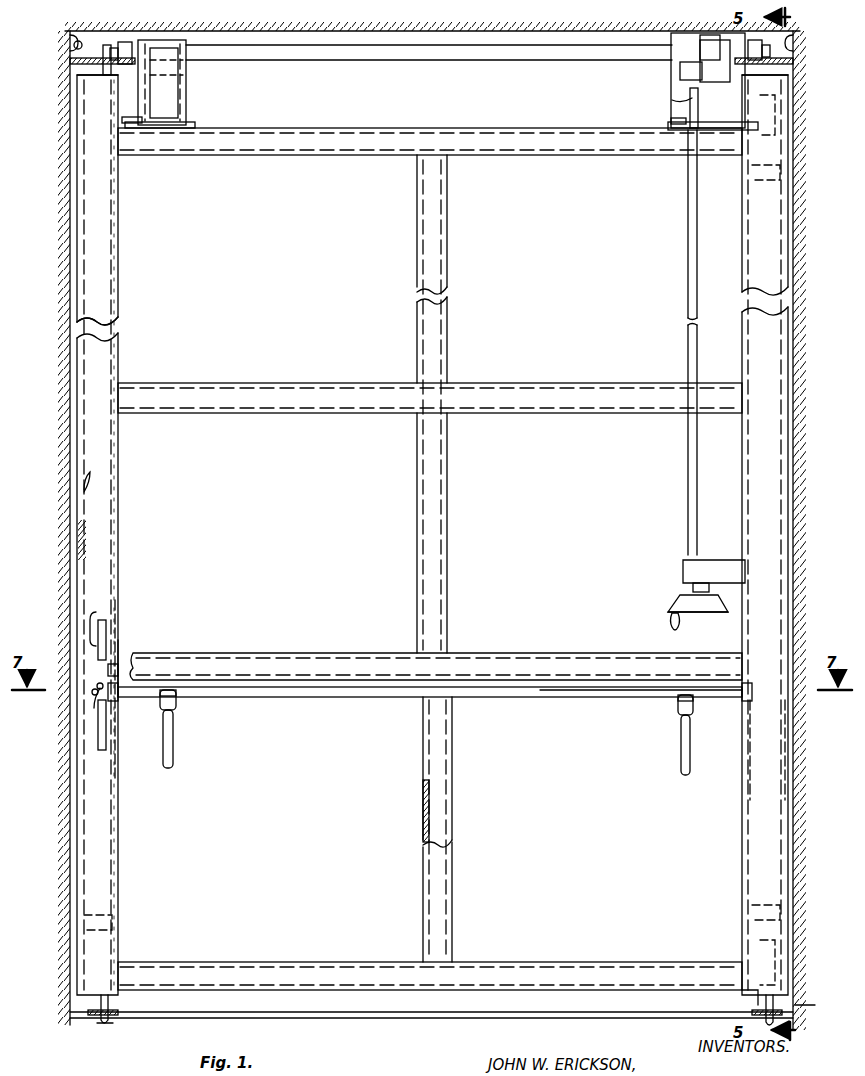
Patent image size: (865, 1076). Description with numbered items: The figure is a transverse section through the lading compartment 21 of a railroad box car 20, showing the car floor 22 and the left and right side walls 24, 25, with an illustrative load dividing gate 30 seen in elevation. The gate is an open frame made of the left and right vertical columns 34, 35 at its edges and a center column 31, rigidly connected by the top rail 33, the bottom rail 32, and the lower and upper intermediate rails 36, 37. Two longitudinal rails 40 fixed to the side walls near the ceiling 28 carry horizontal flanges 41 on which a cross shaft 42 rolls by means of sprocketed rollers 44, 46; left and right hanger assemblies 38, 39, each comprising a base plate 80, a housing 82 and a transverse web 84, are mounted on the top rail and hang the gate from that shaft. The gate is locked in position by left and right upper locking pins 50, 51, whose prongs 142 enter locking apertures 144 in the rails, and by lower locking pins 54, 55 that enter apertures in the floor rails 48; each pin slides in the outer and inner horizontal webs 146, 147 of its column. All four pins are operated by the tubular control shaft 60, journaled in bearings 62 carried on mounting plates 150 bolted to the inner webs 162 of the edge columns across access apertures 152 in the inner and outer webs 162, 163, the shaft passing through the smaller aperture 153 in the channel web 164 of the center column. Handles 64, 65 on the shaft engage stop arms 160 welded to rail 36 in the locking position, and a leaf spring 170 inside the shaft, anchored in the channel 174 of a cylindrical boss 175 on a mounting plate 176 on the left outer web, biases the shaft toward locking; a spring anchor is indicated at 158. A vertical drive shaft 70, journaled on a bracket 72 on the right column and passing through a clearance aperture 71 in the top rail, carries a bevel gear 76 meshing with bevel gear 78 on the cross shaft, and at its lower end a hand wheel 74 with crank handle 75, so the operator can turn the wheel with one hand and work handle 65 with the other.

The railroad box car 20 is at (70, 422).
The lading compartment 21 is at (82, 489).
The car floor 22 is at (358, 1012).
The left side wall 24 is at (70, 544).
The right side wall 25 is at (795, 338).
The ceiling 28 is at (390, 37).
The load dividing gate 30 is at (74, 306).
The center column 31 is at (451, 506).
The bottom rail 32 is at (262, 957).
The top rail 33 is at (370, 124).
The left vertical column 34 is at (120, 526).
The right vertical column 35 is at (784, 408).
The lower intermediate rail 36 is at (270, 652).
The upper intermediate rail 37 is at (314, 379).
The left hanger assembly 38 is at (192, 102).
The right hanger assembly 39 is at (668, 93).
The rails 40 is at (68, 40).
The horizontal flanges 41 is at (68, 62).
The cross shaft 42 is at (383, 46).
The sprocketed roller 44 is at (128, 40).
The sprocketed roller 46 is at (738, 36).
The floor rails 48 is at (118, 1010).
The left upper locking pin 50 is at (60, 74).
The right upper locking pin 51 is at (790, 70).
The left lower locking pin 54 is at (110, 1019).
The right lower locking pin 55 is at (774, 1007).
The control shaft 60 is at (354, 702).
The bearings 62 is at (118, 694).
The handle 64 is at (174, 746).
The handle 65 is at (690, 744).
The vertical drive shaft 70 is at (688, 474).
The clearance aperture 71 is at (694, 136).
The bracket 72 is at (688, 566).
The hand wheel 74 is at (704, 614).
The crank handle 75 is at (670, 628).
The bevel gear 76 is at (680, 72).
The bevel gear 78 is at (690, 36).
The base plate 80 is at (196, 118).
The housing 82 is at (165, 86).
The vertical transverse web 84 is at (144, 102).
The pointed prongs 142 is at (100, 1020).
The locking apertures 144 is at (98, 1007).
The outer horizontal web 146 is at (778, 100).
The inner horizontal web 147 is at (785, 160).
The mounting plate 150 is at (116, 670).
The access aperture 152 is at (106, 650).
The aperture 153 is at (422, 778).
The lower link 158 is at (100, 752).
The stop arms 160 is at (174, 666).
The inner web 162 is at (118, 610).
The outer web 163 is at (98, 610).
The channel web 164 is at (423, 835).
The leaf spring 170 is at (114, 650).
The channel 174 is at (94, 704).
The cylindrical boss 175 is at (98, 682).
The mounting plate 176 is at (86, 692).